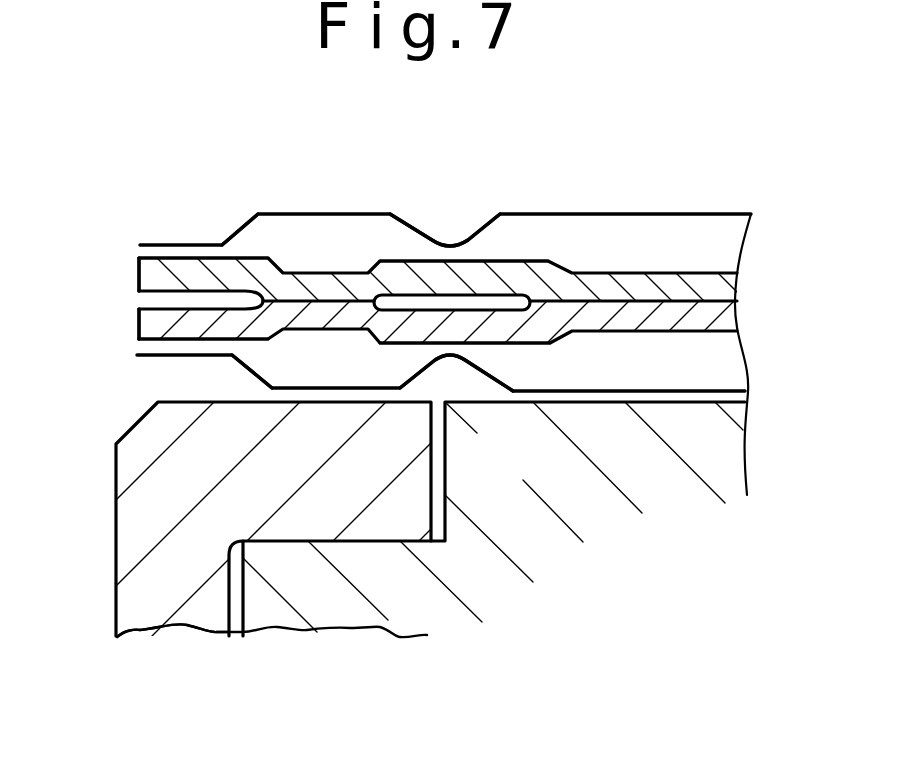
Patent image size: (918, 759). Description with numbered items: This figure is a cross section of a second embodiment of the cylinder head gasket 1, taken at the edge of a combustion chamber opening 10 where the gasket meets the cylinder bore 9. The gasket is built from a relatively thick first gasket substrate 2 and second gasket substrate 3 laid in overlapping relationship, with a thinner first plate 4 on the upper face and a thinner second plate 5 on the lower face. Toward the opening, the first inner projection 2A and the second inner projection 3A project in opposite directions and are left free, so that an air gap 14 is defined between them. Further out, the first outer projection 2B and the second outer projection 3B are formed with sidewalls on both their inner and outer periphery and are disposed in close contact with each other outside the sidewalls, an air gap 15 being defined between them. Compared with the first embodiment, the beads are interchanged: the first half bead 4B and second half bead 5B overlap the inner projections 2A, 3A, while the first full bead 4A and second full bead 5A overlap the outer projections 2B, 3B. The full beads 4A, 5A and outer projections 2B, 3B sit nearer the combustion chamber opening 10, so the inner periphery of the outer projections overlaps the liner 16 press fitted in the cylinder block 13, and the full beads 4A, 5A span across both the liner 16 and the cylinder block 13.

The cylinder head gasket 1 is at (690, 213).
The first gasket substrate 2 is at (728, 283).
The first inner projection 2A is at (187, 258).
The first outer projection 2B is at (517, 260).
The second gasket substrate 3 is at (727, 322).
The second inner projection 3A is at (150, 342).
The second outer projection 3B is at (535, 344).
The first plate 4 is at (733, 215).
The first full bead 4A is at (453, 244).
The first half bead 4B is at (242, 227).
The second plate 5 is at (686, 393).
The second full bead 5A is at (457, 360).
The second half bead 5B is at (240, 367).
The cylinder bore 9 is at (115, 561).
The combustion chamber opening 10 is at (140, 268).
The cylinder block 13 is at (393, 607).
The air gap 14 is at (243, 298).
The air gap 15 is at (513, 300).
The liner 16 is at (180, 617).